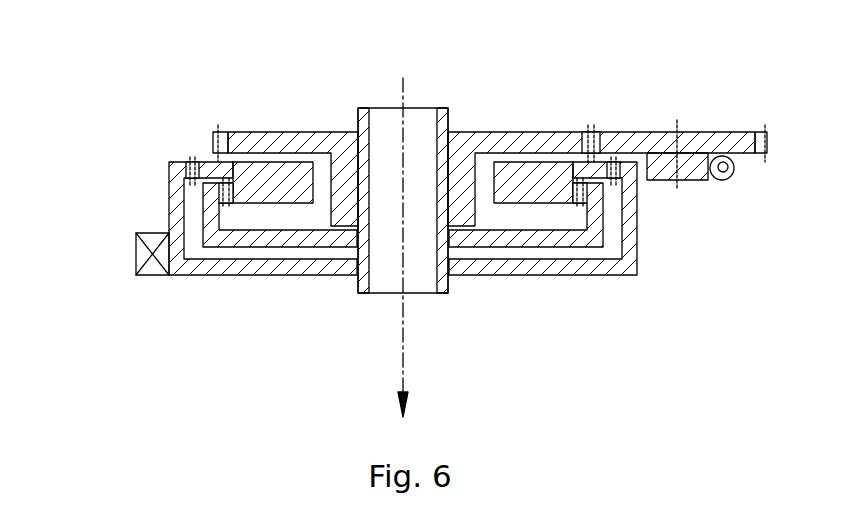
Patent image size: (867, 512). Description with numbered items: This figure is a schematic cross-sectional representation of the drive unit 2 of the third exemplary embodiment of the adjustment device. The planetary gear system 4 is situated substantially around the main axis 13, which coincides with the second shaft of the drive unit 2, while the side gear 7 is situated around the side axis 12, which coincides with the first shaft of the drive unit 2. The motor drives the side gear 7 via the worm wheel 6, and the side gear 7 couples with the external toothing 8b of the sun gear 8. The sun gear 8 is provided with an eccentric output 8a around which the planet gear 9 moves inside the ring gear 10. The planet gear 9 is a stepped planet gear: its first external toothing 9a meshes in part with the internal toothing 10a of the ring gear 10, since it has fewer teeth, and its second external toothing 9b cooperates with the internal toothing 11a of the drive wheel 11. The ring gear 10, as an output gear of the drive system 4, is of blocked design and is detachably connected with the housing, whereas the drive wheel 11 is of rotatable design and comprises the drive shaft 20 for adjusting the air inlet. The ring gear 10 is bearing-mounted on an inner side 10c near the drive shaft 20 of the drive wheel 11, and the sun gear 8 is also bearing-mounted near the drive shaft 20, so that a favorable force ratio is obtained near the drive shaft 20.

The drive unit 2 is at (168, 95).
The planetary gear system 4 is at (160, 142).
The worm wheel 6 is at (733, 173).
The side gear 7 is at (650, 165).
The sun gear 8 is at (540, 143).
The eccentric output 8a is at (343, 202).
The external toothing 8b is at (590, 145).
The planet gear 9 is at (583, 172).
The first external toothing 9a is at (615, 181).
The second external toothing 9b is at (577, 197).
The ring gear 10 is at (592, 268).
The internal toothing 10a is at (621, 172).
The inner side 10c is at (455, 268).
The drive wheel 11 is at (592, 240).
The internal toothing 11a is at (622, 185).
The side axis 12 is at (677, 120).
The main axis 13 is at (405, 310).
The drive shaft 20 is at (365, 277).